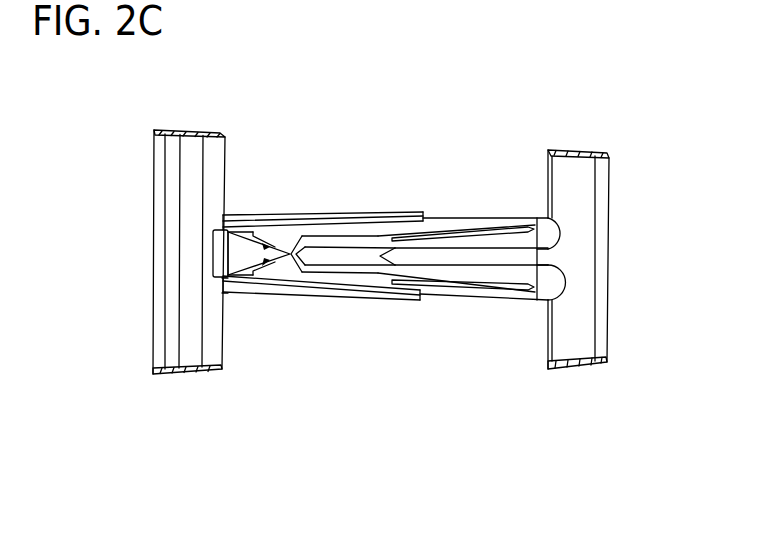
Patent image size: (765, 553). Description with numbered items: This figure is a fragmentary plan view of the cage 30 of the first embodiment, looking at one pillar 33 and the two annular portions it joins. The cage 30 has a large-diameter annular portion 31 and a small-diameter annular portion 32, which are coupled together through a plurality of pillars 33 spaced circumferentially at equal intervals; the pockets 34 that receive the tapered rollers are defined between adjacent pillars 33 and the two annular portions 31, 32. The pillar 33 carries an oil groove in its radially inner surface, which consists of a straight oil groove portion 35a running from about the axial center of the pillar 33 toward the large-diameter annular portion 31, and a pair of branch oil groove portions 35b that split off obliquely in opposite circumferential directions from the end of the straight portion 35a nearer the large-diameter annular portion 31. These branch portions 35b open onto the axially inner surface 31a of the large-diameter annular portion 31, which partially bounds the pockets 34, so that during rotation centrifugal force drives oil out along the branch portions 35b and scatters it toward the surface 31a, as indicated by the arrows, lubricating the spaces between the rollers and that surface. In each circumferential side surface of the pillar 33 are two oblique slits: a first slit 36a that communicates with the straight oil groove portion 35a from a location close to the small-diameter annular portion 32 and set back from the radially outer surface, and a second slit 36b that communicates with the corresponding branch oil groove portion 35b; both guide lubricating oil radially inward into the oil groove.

The cage 30 is at (425, 203).
The large-diameter annular portion 31 is at (167, 285).
The axially inner surface of the large-diameter annular portion 31a is at (225, 347).
The small-diameter annular portion 32 is at (584, 291).
The pillar 33 is at (442, 296).
The pocket 34 is at (410, 186).
The straight oil groove portion 35a is at (320, 254).
The branch oil groove portion 35b is at (260, 245).
The first slit 36a is at (493, 232).
The second slit 36b is at (360, 222).